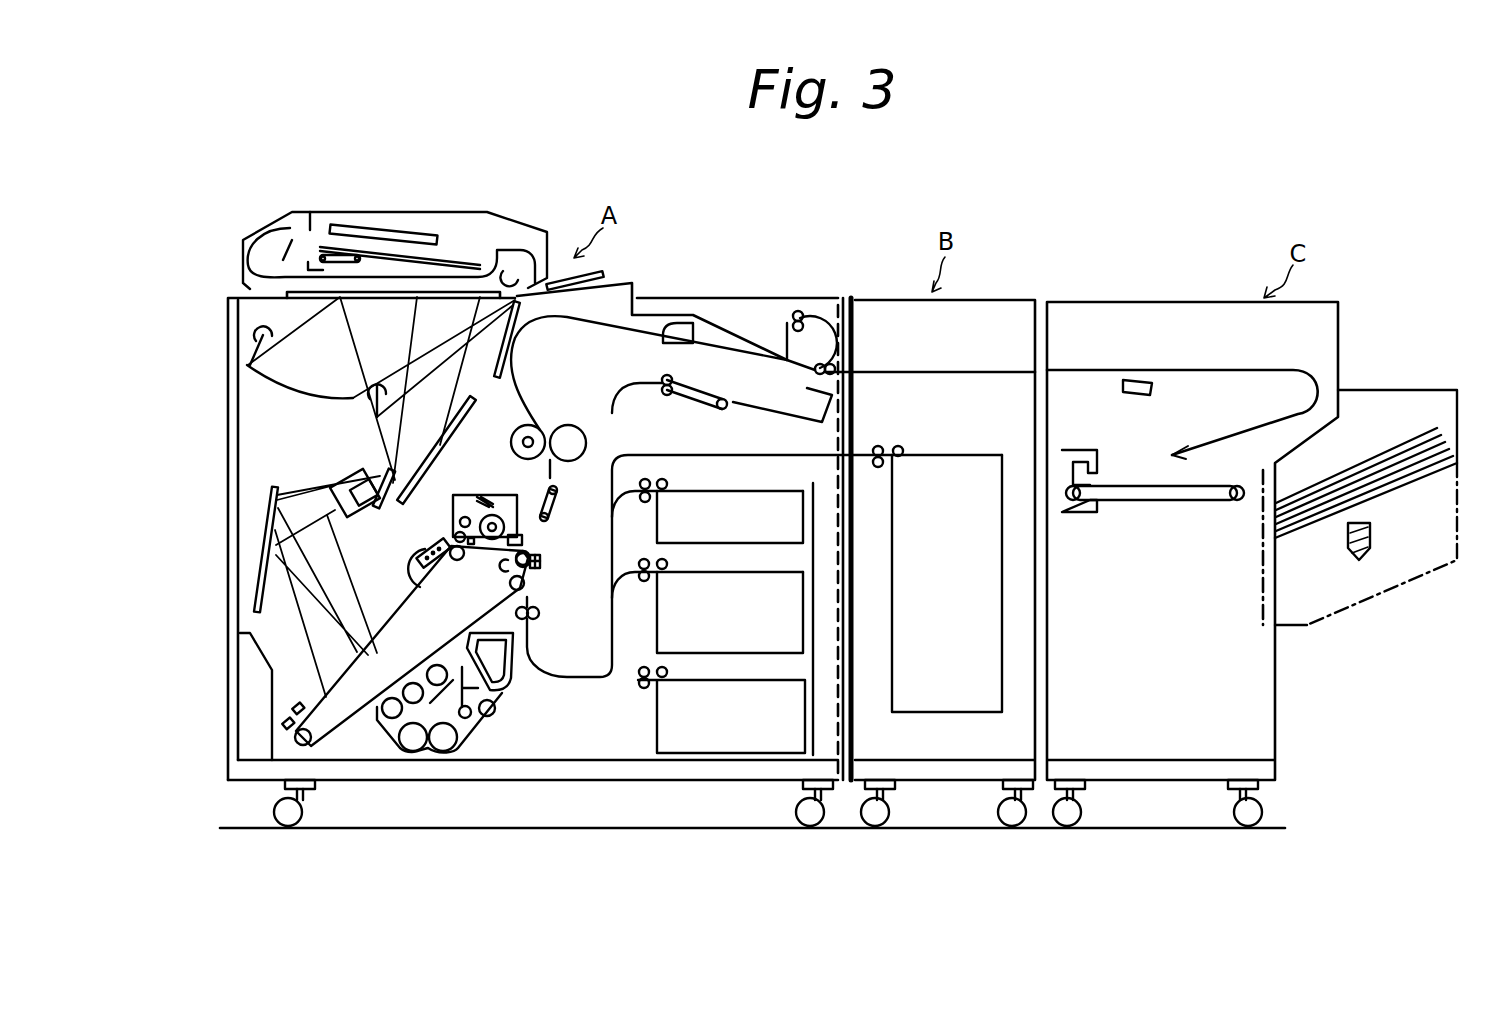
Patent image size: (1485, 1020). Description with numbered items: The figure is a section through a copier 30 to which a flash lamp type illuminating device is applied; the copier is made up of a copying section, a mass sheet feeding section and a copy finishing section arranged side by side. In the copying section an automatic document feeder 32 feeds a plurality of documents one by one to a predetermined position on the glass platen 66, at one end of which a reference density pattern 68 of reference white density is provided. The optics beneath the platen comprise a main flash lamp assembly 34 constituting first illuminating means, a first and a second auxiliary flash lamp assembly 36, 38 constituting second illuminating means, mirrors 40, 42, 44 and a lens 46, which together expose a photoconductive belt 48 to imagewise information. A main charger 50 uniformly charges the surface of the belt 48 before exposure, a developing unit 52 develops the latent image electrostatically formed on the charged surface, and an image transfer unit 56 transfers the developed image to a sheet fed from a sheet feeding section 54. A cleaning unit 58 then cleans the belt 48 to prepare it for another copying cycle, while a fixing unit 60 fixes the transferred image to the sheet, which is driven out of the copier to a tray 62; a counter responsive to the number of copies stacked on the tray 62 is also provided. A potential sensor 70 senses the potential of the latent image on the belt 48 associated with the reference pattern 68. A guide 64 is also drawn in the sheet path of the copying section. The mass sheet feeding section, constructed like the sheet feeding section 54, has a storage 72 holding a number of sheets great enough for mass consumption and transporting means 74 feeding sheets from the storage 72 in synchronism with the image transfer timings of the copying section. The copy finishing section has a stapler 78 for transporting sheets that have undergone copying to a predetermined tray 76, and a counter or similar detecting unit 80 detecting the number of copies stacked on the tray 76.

The copying machine 30 is at (1196, 238).
The automatic document feeder 32 is at (387, 212).
The main flash lamp assembly 34 is at (250, 335).
The first auxiliary flash lamp assembly 36 is at (373, 414).
The second auxiliary flash lamp assembly 38 is at (377, 400).
The mirror 40 is at (520, 357).
The mirror 42 is at (470, 404).
The mirror 44 is at (262, 525).
The lens 46 is at (340, 483).
The photoconductive belt 48 is at (340, 727).
The main charger 50 is at (420, 587).
The developing unit 52 is at (473, 717).
The sheet feeding section 54 is at (725, 535).
The image transfer unit 56 is at (542, 564).
The cleaning unit 58 is at (492, 510).
The fixing unit 60 is at (532, 437).
The tray 62 is at (733, 330).
The guide 64 is at (683, 322).
The glass platen 66 is at (455, 292).
The reference density pattern 68 is at (521, 297).
The potential sensor 70 is at (287, 708).
The storage 72 is at (945, 712).
The transporting means 74 is at (882, 443).
The tray 76 is at (1390, 497).
The stapler 78 is at (1080, 450).
The detecting unit 80 is at (1155, 386).